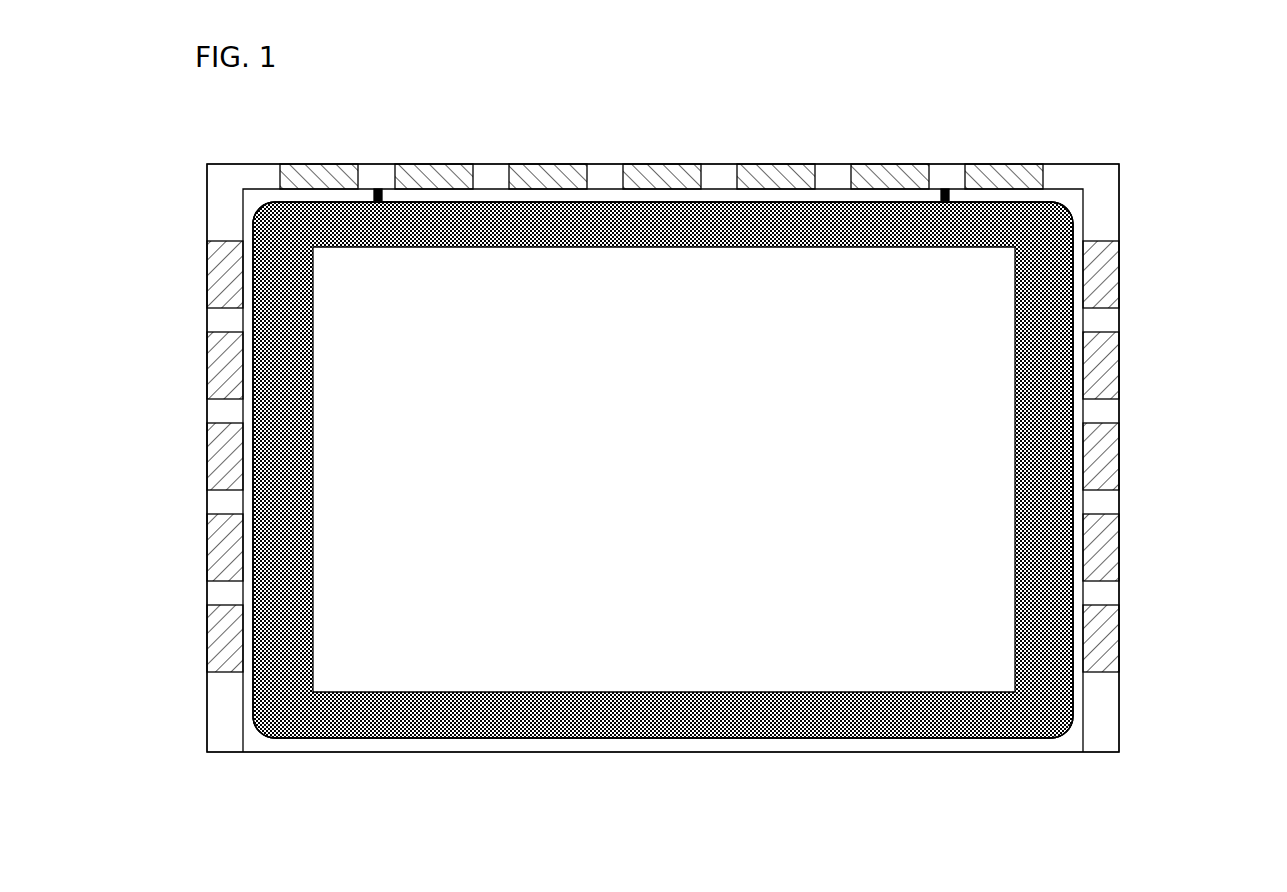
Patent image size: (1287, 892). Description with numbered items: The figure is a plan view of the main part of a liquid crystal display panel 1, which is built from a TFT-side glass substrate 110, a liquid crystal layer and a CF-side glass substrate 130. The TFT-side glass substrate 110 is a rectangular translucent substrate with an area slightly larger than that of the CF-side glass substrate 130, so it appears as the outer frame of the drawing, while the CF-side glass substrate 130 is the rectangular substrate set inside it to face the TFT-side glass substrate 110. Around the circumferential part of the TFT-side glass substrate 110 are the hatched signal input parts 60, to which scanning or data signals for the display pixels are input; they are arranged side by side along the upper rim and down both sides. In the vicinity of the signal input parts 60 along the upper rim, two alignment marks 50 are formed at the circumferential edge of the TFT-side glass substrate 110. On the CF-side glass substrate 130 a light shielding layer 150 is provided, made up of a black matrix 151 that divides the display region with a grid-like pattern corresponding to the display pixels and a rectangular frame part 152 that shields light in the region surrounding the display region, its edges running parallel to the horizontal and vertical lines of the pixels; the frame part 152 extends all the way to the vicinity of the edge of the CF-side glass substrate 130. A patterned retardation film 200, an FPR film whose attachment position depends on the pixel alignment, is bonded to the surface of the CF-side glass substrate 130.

The liquid crystal display panel 1 is at (195, 141).
The alignment mark 50 is at (378, 189).
The signal input part 60 is at (325, 171).
The TFT-side glass substrate 110 is at (1100, 183).
The CF-side glass substrate 130 is at (1073, 212).
The patterned retardation film 200 is at (753, 470).
The light shielding layer 150 is at (480, 815).
The black matrix 151 is at (466, 608).
The frame part 152 is at (358, 717).